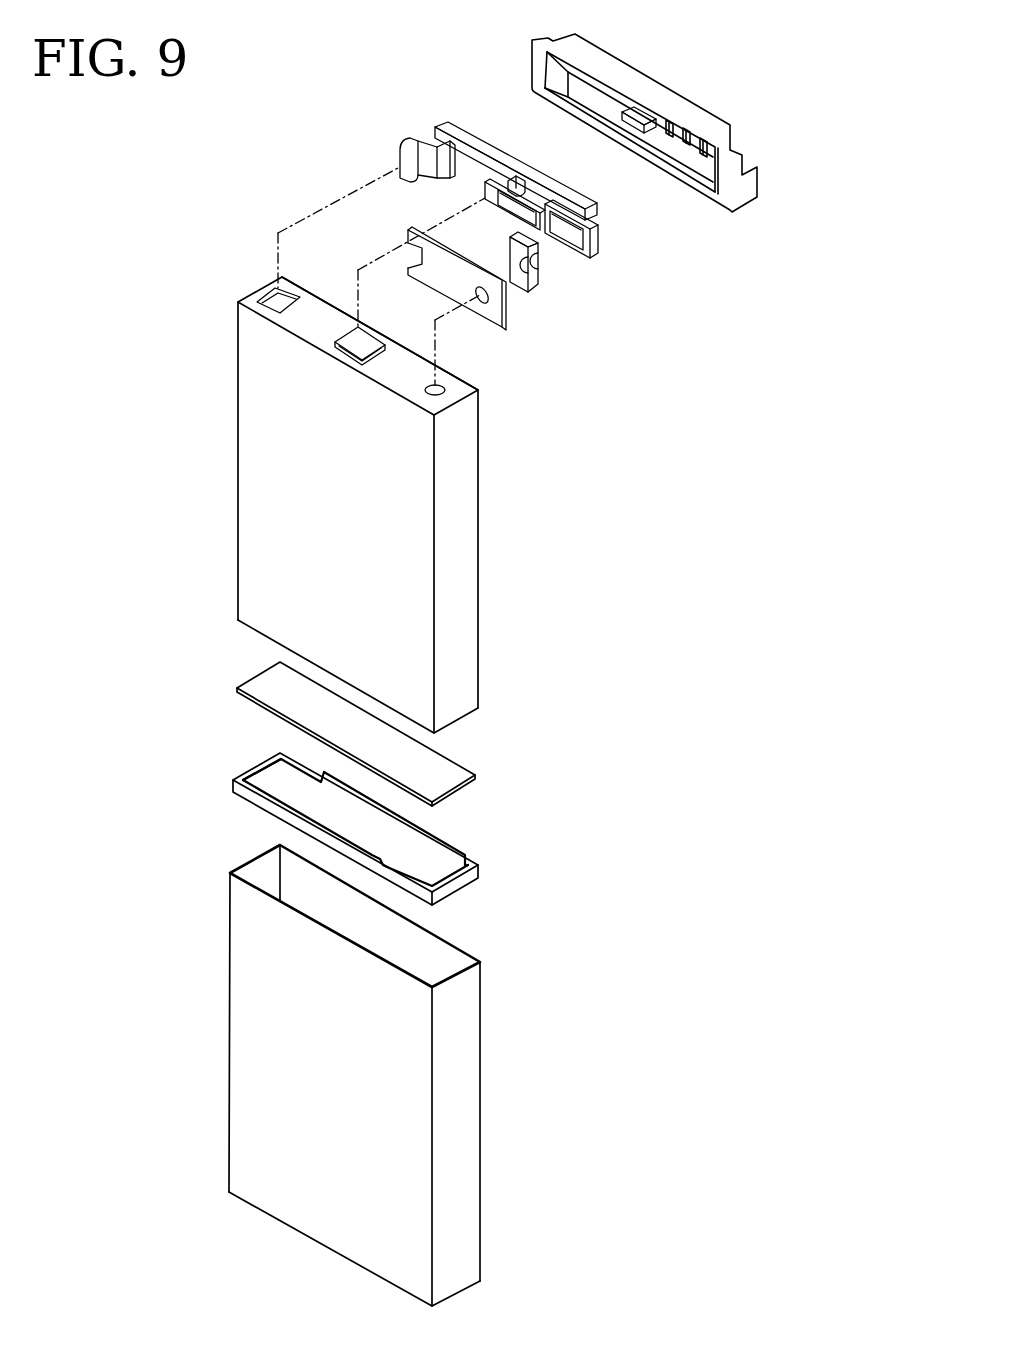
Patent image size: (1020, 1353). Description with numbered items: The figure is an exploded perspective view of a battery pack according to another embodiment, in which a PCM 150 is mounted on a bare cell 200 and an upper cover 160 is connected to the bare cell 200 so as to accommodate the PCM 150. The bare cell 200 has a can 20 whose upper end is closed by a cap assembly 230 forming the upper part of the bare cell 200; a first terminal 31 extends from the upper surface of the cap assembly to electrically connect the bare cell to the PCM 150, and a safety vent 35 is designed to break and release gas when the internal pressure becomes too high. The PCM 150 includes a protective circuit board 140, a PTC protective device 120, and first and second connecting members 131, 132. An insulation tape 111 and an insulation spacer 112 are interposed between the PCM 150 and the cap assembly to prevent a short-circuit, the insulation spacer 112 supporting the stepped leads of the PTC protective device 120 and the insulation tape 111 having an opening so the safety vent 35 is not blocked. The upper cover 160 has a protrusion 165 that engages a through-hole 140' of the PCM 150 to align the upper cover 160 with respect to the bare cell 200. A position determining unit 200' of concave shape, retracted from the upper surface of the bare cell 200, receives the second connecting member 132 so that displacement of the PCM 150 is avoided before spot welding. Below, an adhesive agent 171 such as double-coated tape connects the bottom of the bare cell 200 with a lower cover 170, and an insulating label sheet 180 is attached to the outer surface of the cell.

The can 20 is at (470, 468).
The first terminal 31 is at (357, 342).
The safety vent 35 is at (444, 389).
The insulation tape 111 is at (503, 328).
The insulation spacer 112 is at (532, 293).
The positive temperature coefficient (PTC) protective device 120 is at (501, 198).
The first connecting member 131 is at (583, 240).
The second connecting member 132 is at (402, 160).
The protective circuit board 140 is at (502, 142).
The through-hole 140' is at (532, 160).
The PCM 150 is at (608, 228).
The upper cover 160 is at (700, 110).
The protrusion 165 is at (640, 108).
The lower cover 170 is at (457, 888).
The adhesive agent 171 is at (462, 792).
The insulating label sheet 180 is at (470, 1138).
The bare cell 200 is at (558, 611).
The position determining unit 200' is at (259, 270).
The cap assembly 230 is at (303, 323).